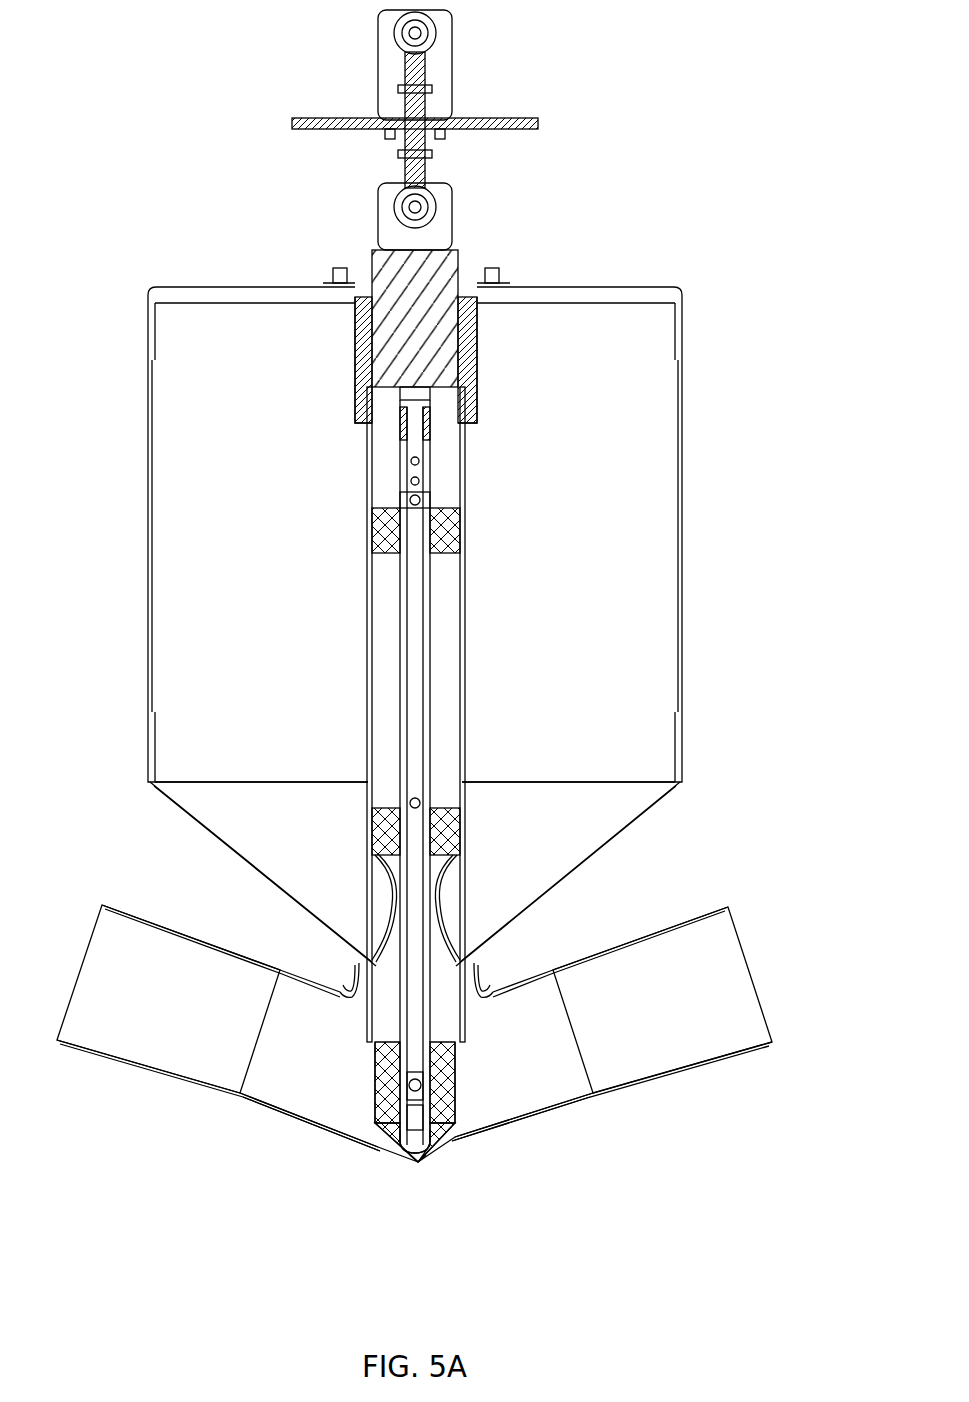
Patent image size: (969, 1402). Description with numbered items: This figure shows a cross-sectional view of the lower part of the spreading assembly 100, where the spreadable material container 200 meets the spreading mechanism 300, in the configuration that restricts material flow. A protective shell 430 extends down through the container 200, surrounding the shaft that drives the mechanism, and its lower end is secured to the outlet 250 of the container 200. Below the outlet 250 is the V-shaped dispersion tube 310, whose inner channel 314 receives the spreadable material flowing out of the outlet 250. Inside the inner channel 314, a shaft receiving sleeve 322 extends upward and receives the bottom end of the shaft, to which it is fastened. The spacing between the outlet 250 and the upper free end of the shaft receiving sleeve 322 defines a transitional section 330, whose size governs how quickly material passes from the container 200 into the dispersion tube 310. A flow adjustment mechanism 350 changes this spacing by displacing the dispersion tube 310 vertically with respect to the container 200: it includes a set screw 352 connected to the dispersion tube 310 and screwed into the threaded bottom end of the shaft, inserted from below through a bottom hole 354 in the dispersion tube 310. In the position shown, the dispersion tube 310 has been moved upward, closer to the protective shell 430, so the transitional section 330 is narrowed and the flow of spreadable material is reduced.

The spreading assembly 100 is at (648, 140).
The spreadable material container 200 is at (690, 497).
The protective shell 430 is at (368, 795).
The spreading mechanism 300 is at (118, 1135).
The inner channel 314 is at (258, 1077).
The set screw 352 is at (360, 985).
The outlet 250 is at (497, 985).
The transitional section 330 is at (375, 1045).
The dispersion tube 310 is at (545, 1118).
The shaft receiving sleeve 322 is at (360, 1143).
The flow adjustment mechanism 350 is at (405, 1153).
The bottom hole 354 is at (420, 1165).